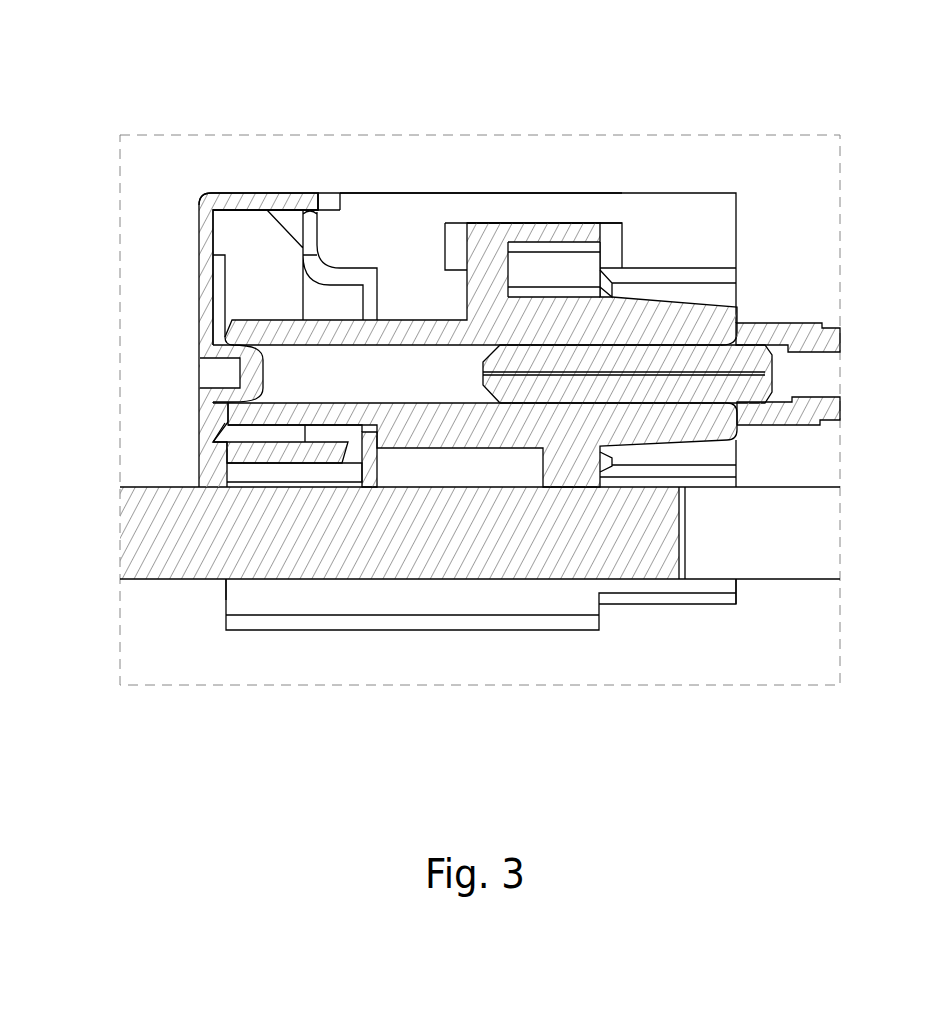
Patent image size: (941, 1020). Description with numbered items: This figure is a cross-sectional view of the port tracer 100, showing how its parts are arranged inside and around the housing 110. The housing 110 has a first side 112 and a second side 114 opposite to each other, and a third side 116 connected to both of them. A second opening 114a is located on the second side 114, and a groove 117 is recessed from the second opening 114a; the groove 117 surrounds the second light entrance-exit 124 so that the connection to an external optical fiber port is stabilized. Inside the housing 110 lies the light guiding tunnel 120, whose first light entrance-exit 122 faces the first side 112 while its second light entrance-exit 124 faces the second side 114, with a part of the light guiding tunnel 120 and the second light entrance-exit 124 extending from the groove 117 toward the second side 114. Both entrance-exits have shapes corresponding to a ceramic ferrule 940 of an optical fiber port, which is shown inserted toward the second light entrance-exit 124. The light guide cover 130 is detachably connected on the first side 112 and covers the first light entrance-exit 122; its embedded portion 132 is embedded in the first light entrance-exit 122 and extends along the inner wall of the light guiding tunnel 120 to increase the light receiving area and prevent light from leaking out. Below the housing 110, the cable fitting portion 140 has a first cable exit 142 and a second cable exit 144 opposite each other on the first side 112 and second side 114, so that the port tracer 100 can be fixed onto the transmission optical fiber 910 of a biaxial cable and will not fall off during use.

The port tracer 100 is at (932, 73).
The housing 110 is at (660, 193).
The first side 112 is at (200, 294).
The second side 114 is at (736, 205).
The second opening 114a is at (738, 275).
The third side 116 is at (500, 193).
The groove 117 is at (672, 450).
The light guiding tunnel 120 is at (397, 344).
The first light entrance-exit 122 is at (238, 403).
The second light entrance-exit 124 is at (737, 345).
The light guide cover 130 is at (205, 239).
The embedded portion 132 is at (253, 372).
The cable fitting portion 140 is at (307, 598).
The first cable exit 142 is at (227, 579).
The second cable exit 144 is at (736, 579).
The transmission optical fiber 910 is at (830, 533).
The ceramic ferrule 940 is at (827, 409).